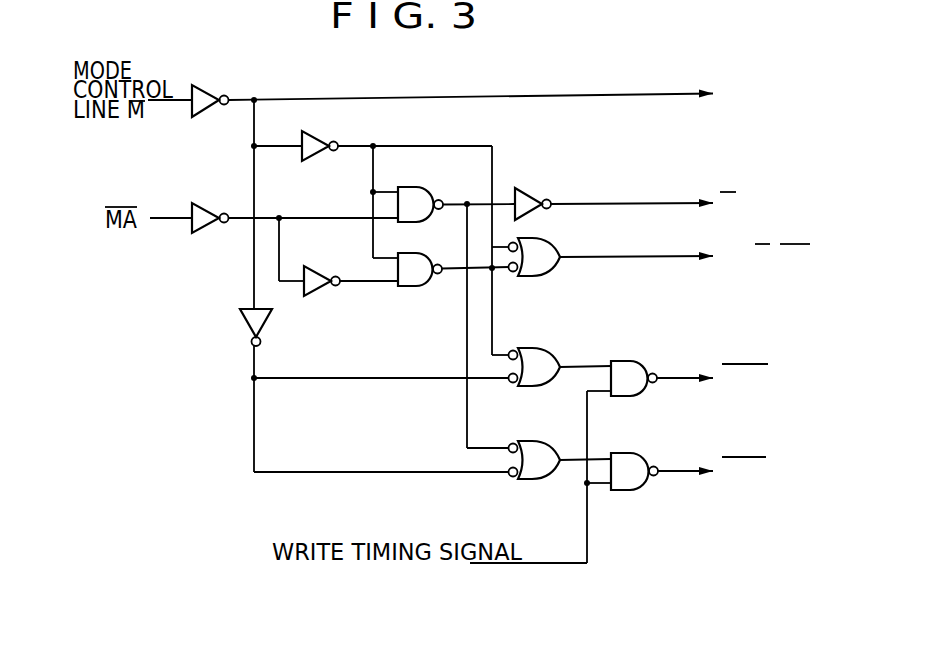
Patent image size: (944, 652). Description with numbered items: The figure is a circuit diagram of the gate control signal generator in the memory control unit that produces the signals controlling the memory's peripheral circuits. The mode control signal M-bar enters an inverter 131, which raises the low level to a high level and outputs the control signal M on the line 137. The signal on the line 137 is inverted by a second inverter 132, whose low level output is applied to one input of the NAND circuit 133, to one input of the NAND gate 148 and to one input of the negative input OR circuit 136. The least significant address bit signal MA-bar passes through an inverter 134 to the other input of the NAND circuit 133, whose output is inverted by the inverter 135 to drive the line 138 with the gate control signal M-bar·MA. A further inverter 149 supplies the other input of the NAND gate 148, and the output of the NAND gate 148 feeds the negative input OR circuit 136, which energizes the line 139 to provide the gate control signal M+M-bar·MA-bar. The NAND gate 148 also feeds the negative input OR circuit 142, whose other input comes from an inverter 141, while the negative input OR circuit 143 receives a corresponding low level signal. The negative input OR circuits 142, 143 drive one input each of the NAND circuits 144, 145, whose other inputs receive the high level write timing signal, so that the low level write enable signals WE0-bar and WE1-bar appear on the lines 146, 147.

The inverter 131 is at (208, 94).
The inverter 132 is at (320, 142).
The NAND circuit 133 is at (421, 195).
The inverter 134 is at (208, 202).
The inverter 135 is at (534, 195).
The negative input OR circuit 136 is at (544, 257).
The line 137 is at (643, 94).
The line 138 is at (645, 200).
The line 139 is at (649, 256).
The inverter 141 is at (262, 318).
The negative input OR circuit 142 is at (539, 352).
The negative input OR circuit 143 is at (539, 447).
The NAND gate 144 is at (633, 361).
The NAND circuit 145 is at (633, 461).
The line 146 is at (685, 380).
The line 147 is at (685, 474).
The NAND gate 148 is at (421, 264).
The inverter 149 is at (322, 276).